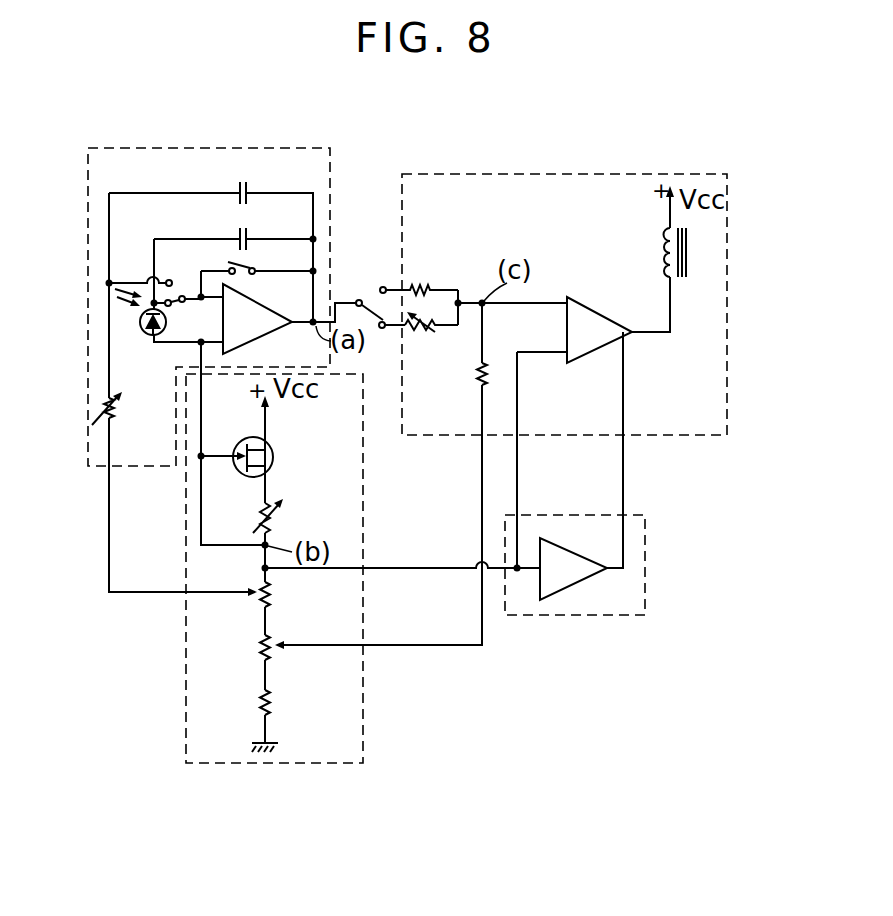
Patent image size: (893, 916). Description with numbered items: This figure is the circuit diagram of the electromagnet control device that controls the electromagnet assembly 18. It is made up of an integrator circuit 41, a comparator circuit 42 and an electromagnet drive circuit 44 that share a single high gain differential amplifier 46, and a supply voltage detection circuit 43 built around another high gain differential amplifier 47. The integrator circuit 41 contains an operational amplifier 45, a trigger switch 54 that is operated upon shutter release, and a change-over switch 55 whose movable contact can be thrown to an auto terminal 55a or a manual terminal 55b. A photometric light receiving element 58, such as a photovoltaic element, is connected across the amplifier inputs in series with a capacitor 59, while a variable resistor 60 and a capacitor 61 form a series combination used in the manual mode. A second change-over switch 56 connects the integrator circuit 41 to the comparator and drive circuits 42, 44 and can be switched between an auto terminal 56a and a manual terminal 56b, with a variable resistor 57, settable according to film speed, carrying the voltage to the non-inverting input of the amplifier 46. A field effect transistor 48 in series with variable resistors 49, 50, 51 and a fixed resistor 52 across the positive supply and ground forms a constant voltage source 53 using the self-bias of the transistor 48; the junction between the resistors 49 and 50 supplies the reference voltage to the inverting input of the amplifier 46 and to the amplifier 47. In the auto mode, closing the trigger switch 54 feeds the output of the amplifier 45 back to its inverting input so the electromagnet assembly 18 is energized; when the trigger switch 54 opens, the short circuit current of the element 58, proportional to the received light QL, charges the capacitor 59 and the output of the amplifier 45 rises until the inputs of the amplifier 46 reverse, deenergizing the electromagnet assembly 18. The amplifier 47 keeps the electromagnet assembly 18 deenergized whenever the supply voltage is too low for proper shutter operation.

The electromagnet assembly 18 is at (689, 252).
The integrator circuit 41 is at (148, 148).
The comparator circuit 42 is at (564, 283).
The electromagnet drive circuit 44 is at (538, 177).
The supply voltage detection circuit 43 is at (582, 613).
The operational amplifier 45 is at (261, 334).
The high gain differential amplifier 46 is at (595, 320).
The high gain differential amplifier 47 is at (578, 557).
The field effect transistor 48 is at (275, 458).
The variable resistor 49 is at (273, 522).
The variable resistor 50 is at (272, 599).
The variable resistor 51 is at (260, 645).
The fixed resistor 52 is at (270, 706).
The constant voltage source 53 is at (188, 685).
The trigger switch 54 is at (248, 262).
The change-over switch 55 is at (174, 269).
The auto terminal 55a is at (196, 317).
The manual terminal 55b is at (168, 280).
The change-over switch 56 is at (398, 308).
The auto terminal 56a is at (382, 328).
The manual terminal 56b is at (385, 288).
The variable resistor 57 is at (413, 329).
The photometric light receiving element 58 is at (145, 333).
The capacitor 59 is at (247, 228).
The variable resistor 60 is at (100, 408).
The capacitor 61 is at (246, 184).
The amount of light QL is at (131, 300).